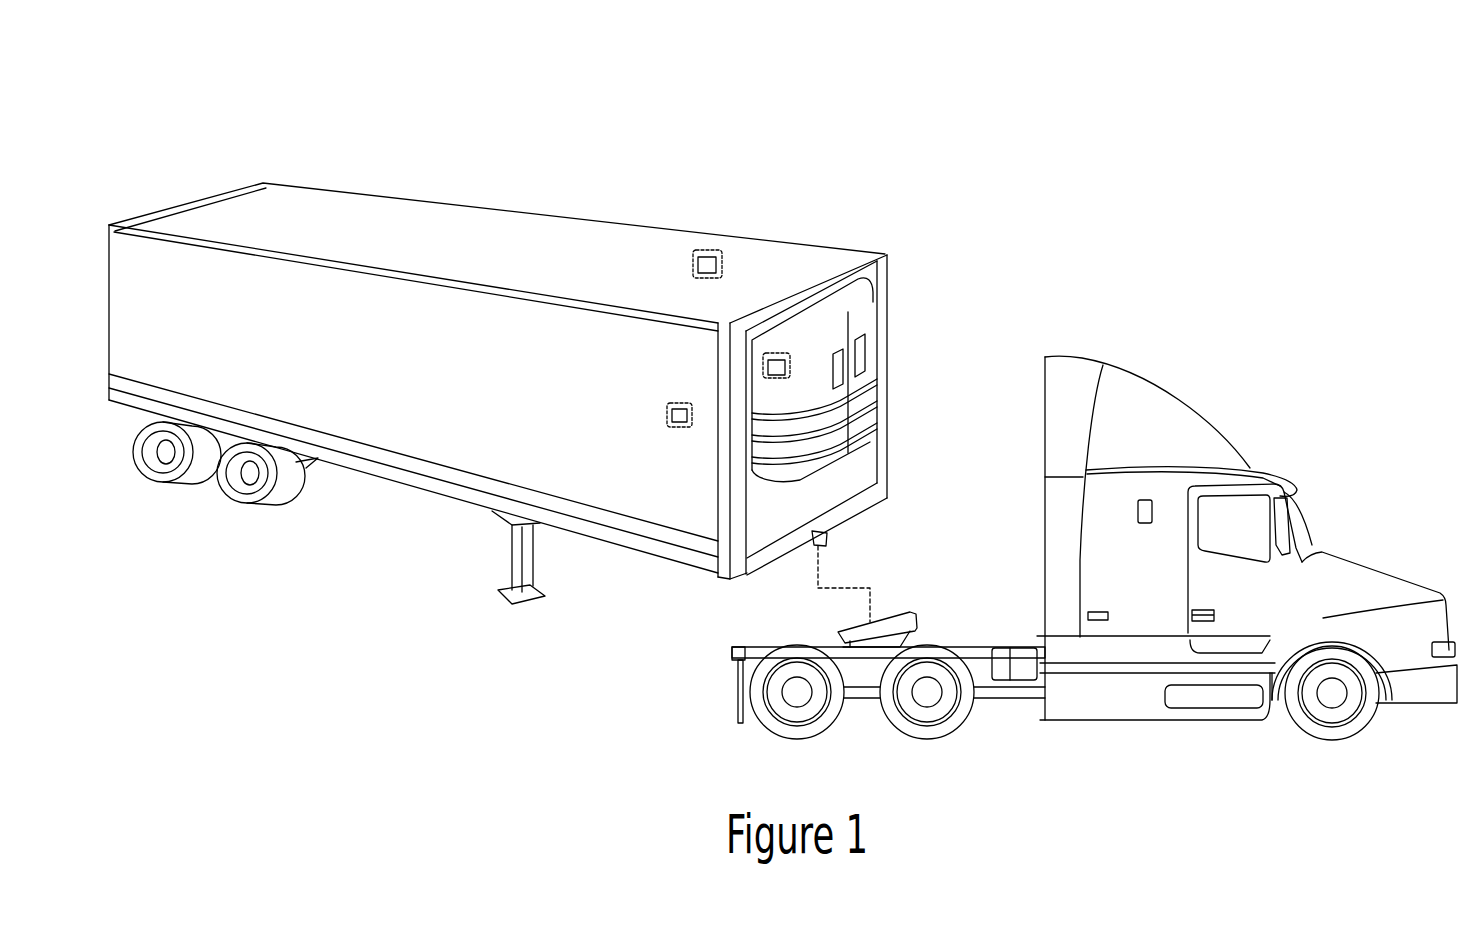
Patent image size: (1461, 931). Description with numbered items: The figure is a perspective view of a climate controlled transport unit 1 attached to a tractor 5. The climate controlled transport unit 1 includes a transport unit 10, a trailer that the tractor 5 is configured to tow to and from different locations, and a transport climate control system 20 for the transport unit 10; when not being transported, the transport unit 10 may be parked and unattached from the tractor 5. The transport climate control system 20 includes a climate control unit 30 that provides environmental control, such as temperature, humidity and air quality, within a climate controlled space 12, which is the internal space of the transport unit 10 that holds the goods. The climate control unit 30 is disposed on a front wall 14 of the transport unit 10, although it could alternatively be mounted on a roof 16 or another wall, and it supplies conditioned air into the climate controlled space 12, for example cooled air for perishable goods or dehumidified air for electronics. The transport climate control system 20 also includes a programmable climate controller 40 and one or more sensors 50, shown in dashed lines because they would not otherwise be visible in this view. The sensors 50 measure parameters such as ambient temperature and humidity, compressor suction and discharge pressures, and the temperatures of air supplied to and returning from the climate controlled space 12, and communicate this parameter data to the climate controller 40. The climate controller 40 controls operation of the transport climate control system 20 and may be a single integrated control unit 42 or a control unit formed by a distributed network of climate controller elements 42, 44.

The climate controlled transport unit 1 is at (221, 94).
The tractor 5 is at (1226, 404).
The transport unit 10 is at (608, 223).
The climate controlled space 12 is at (456, 455).
The front wall 14 is at (871, 452).
The roof 16 is at (452, 222).
The transport climate control system 20 is at (895, 247).
The climate control unit 30 is at (864, 320).
The programmable climate controller 40 is at (727, 624).
The climate controller element 42 is at (676, 429).
The climate controller element 44 is at (770, 382).
The sensor 50 is at (712, 249).